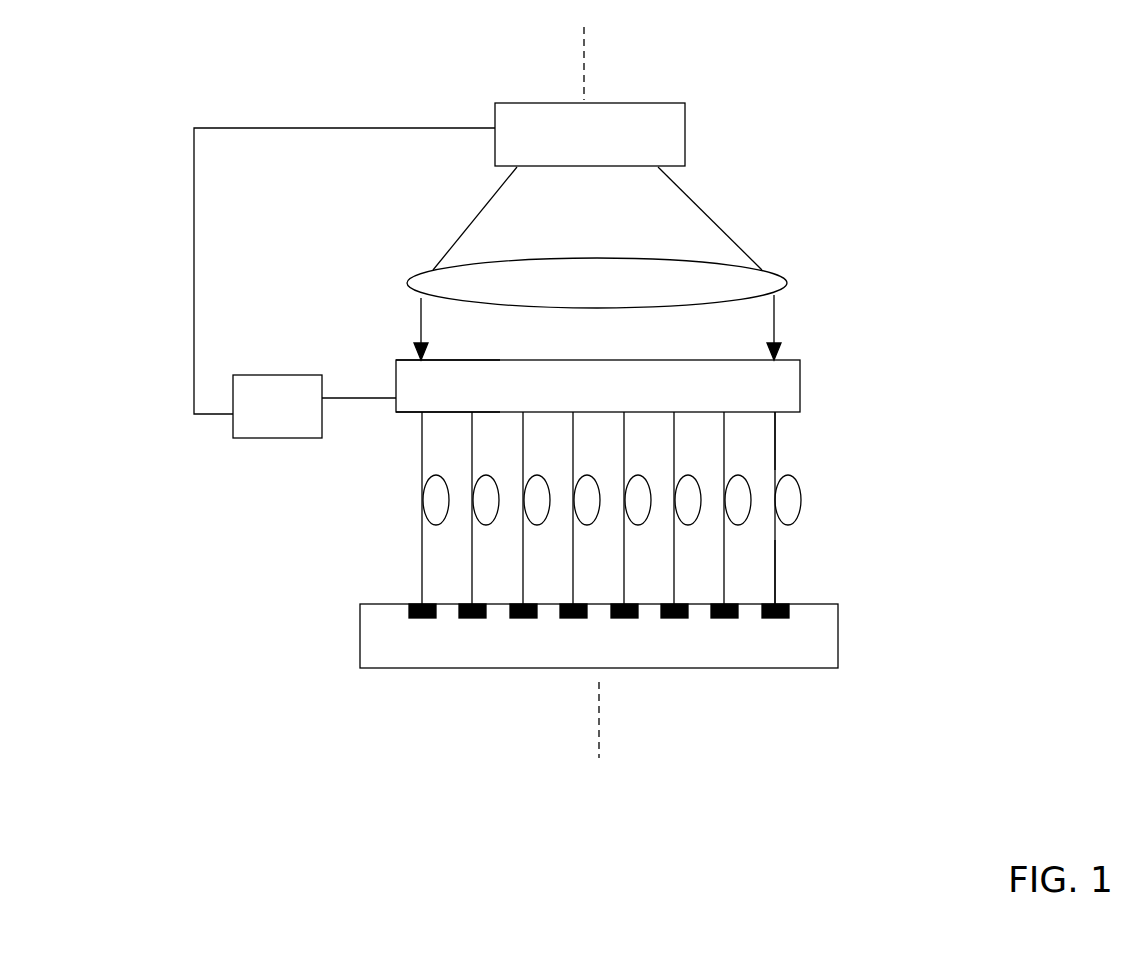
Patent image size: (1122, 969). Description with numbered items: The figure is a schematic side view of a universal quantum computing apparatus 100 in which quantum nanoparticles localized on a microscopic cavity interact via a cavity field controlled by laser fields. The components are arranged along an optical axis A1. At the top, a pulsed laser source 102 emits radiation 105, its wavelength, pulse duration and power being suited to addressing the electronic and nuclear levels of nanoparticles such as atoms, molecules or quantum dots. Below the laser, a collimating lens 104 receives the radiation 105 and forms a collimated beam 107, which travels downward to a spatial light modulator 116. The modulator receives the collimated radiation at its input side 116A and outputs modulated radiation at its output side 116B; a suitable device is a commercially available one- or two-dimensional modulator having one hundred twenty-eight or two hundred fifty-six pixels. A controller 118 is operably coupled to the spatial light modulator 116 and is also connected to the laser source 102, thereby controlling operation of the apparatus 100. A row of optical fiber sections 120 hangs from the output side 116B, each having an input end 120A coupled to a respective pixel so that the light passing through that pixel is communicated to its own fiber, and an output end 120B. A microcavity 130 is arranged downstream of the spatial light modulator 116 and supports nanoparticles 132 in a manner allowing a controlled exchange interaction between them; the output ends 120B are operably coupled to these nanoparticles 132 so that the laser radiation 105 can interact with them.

The universal quantum computing apparatus 100 is at (975, 242).
The pulsed laser source 102 is at (566, 152).
The collimating lens 104 is at (573, 300).
The radiation 105 is at (700, 205).
The collimated beam 107 is at (774, 320).
The spatial light modulator 116 is at (574, 403).
The input side 116A is at (410, 360).
The output side 116B is at (410, 414).
The controller 118 is at (301, 423).
The optical fiber sections 120 is at (775, 540).
The input end 120A is at (788, 427).
The output end 120B is at (790, 582).
The microcavity 130 is at (589, 657).
The nanoparticles 132 is at (423, 618).
The optical axis A1 is at (585, 65).